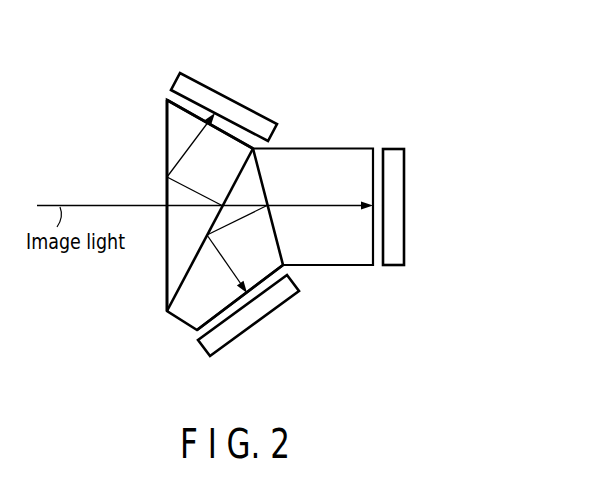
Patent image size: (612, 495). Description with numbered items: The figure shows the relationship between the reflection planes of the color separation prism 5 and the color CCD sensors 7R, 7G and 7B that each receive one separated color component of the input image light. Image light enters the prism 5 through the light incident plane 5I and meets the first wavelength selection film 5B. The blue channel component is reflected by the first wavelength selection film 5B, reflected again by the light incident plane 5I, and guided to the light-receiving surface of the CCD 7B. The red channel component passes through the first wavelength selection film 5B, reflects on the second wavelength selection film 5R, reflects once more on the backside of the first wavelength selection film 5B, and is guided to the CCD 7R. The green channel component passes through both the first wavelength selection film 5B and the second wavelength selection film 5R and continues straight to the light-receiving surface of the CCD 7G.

The color separation prism 5 is at (165, 287).
The light incident plane 5I is at (167, 128).
The first wavelength selection film 5B is at (243, 175).
The second wavelength selection film 5R is at (280, 245).
The color CCD sensor of blue channel 7B is at (212, 95).
The color CCD sensor of red channel 7R is at (258, 312).
The color CCD sensor of green channel 7G is at (397, 188).